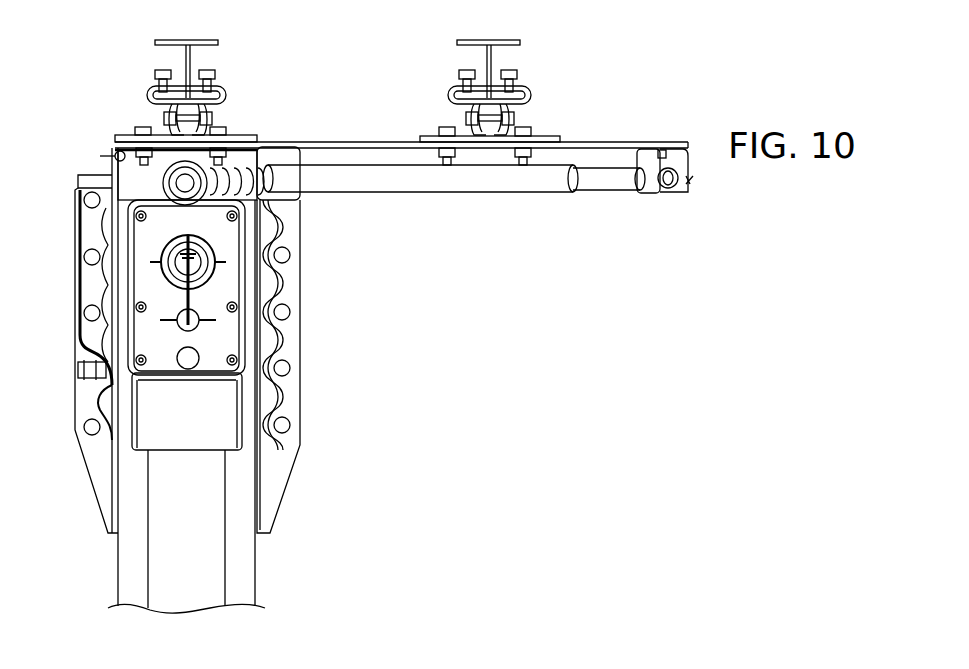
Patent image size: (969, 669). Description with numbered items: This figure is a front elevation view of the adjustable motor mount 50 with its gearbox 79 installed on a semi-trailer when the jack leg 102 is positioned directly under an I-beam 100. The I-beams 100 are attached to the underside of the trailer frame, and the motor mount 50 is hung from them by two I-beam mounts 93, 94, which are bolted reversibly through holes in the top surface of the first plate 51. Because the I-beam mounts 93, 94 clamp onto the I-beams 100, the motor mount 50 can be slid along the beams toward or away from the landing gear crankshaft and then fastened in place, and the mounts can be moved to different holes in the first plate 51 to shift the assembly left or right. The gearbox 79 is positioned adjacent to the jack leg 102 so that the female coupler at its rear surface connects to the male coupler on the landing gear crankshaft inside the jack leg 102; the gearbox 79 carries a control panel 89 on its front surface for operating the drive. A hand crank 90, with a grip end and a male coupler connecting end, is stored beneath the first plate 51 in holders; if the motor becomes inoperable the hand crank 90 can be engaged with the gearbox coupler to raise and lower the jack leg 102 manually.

The adjustable motor mount 50 is at (688, 78).
The first plate 51 is at (345, 141).
The gearbox 79 is at (232, 291).
The control panel 89 is at (220, 410).
The hand crank 90 is at (470, 193).
The I-beam mount 93 is at (226, 91).
The I-beam mount 94 is at (530, 91).
The I-beam 100 is at (200, 42).
The jack leg 102 is at (205, 588).